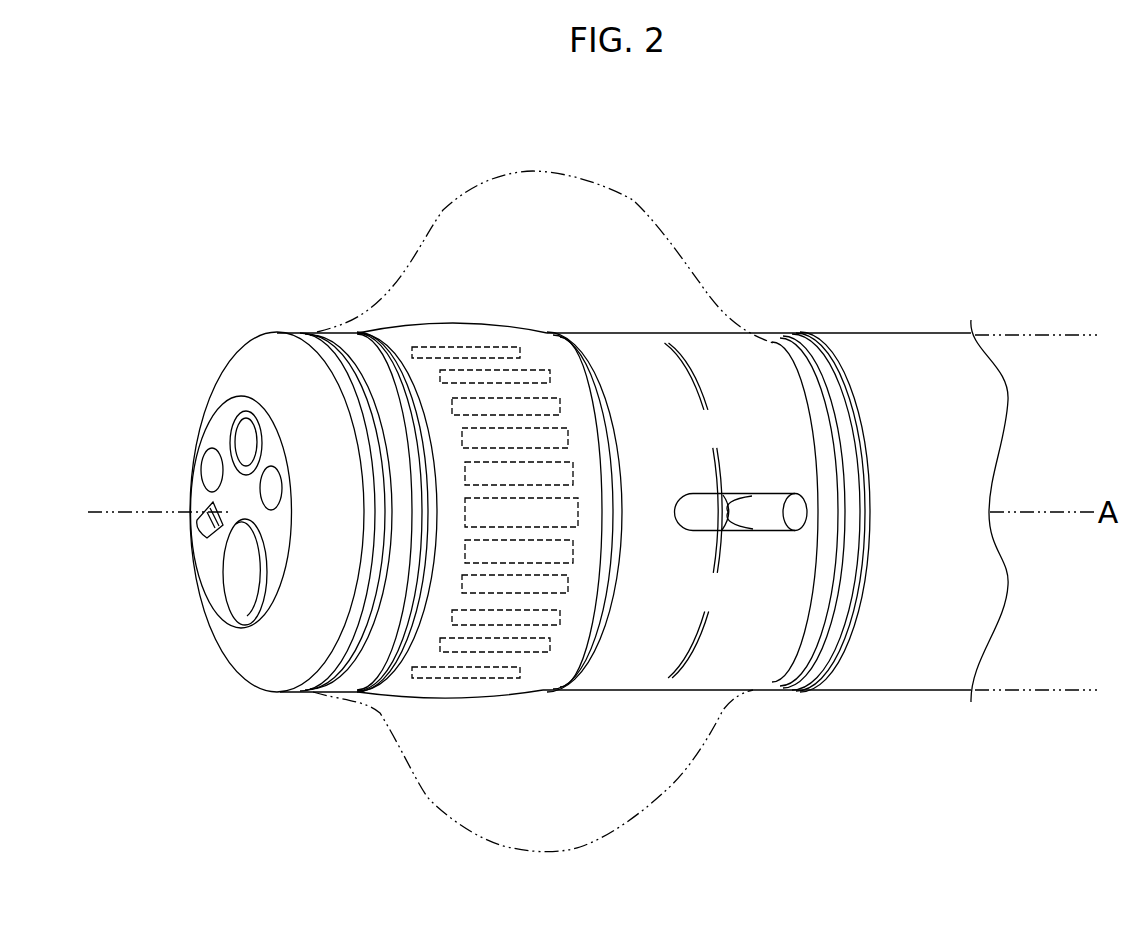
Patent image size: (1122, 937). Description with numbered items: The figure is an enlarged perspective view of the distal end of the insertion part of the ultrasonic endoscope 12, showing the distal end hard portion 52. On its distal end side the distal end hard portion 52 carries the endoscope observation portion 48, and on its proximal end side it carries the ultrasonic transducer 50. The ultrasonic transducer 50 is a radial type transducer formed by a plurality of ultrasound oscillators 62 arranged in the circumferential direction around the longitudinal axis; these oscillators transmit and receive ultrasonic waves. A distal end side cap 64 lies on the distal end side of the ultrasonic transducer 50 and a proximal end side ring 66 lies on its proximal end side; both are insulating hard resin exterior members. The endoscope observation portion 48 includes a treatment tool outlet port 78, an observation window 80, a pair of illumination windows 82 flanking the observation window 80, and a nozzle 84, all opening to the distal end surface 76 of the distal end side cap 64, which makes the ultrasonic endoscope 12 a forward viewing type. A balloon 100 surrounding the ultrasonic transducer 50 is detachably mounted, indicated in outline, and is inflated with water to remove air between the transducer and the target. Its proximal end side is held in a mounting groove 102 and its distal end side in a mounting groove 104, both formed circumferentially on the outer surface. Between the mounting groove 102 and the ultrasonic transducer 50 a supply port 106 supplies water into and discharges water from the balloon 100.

The ultrasonic endoscope 12 is at (907, 214).
The endoscope observation portion 48 is at (244, 337).
The ultrasonic transducer 50 is at (531, 329).
The distal end hard portion 52 is at (827, 305).
The ultrasound oscillators 62 is at (455, 347).
The distal end side cap 64 is at (275, 363).
The proximal end side ring 66 is at (645, 352).
The distal end surface 76 is at (213, 550).
The treatment tool outlet port 78 is at (250, 578).
The observation window 80 is at (243, 442).
The illumination window 82 is at (265, 498).
The nozzle 84 is at (203, 527).
The balloon 100 is at (530, 172).
The mounting groove 102 is at (796, 657).
The mounting groove 104 is at (346, 667).
The supply port 106 is at (797, 513).